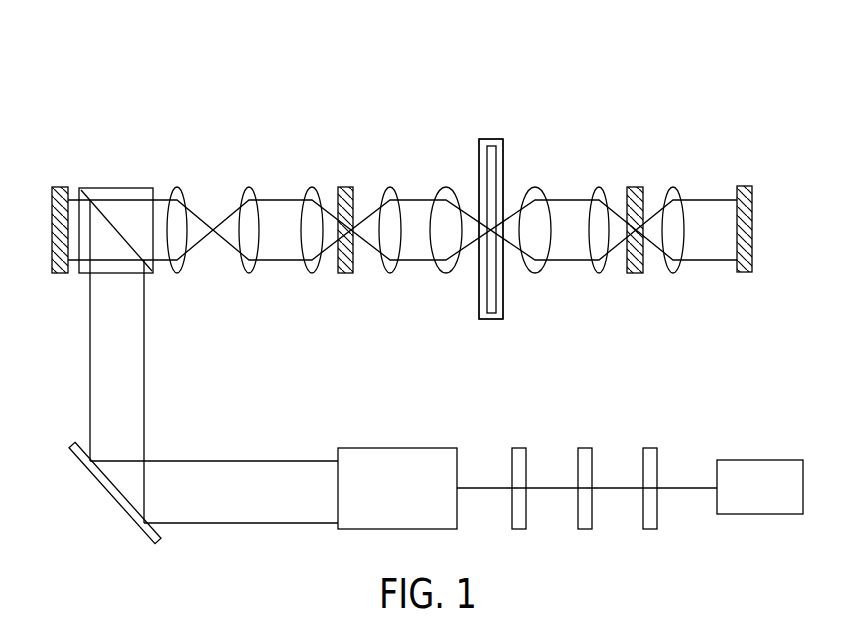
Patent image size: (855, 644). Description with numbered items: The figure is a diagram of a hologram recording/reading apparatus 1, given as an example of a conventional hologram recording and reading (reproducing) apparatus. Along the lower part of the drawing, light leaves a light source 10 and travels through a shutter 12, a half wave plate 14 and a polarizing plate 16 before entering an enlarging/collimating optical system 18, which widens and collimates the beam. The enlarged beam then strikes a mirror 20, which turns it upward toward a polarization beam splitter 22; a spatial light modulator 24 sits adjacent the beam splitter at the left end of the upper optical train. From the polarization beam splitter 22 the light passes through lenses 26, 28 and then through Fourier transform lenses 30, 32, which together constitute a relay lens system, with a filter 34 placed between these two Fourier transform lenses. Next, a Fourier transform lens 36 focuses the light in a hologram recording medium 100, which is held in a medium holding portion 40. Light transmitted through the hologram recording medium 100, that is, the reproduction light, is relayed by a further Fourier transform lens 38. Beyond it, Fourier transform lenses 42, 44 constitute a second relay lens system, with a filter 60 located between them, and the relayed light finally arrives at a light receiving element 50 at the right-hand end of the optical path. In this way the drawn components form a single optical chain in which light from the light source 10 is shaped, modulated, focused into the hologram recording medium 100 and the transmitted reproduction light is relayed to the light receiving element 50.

The hologram recording/reading apparatus 1 is at (146, 85).
The light source 10 is at (760, 460).
The shutter 12 is at (651, 448).
The half wave plate 14 is at (585, 448).
The polarizing plate 16 is at (519, 448).
The enlarging/collimating optical system 18 is at (395, 448).
The mirror 20 is at (108, 495).
The polarization beam splitter 22 is at (115, 188).
The spatial light modulator 24 is at (59, 187).
The lens 26 is at (176, 187).
The lens 28 is at (248, 187).
The Fourier transform lens 30 is at (311, 187).
The Fourier transform lens 32 is at (390, 187).
The filter 34 is at (346, 187).
The Fourier transform lens 36 is at (446, 187).
The Fourier transform lens 38 is at (535, 187).
The medium holding portion 40 is at (495, 319).
The Fourier transform lens 42 is at (599, 187).
The Fourier transform lens 44 is at (673, 187).
The light receiving element 50 is at (746, 186).
The filter 60 is at (635, 187).
The hologram recording medium 100 is at (492, 146).